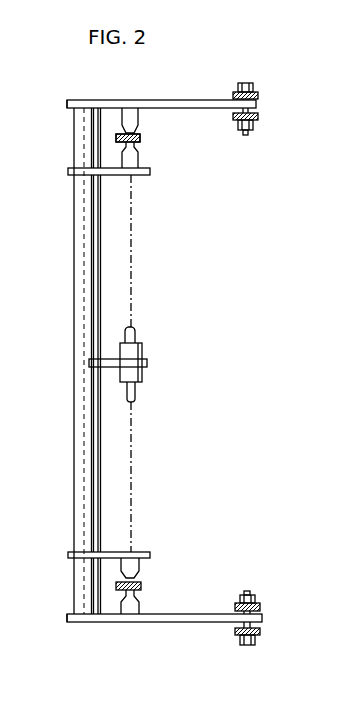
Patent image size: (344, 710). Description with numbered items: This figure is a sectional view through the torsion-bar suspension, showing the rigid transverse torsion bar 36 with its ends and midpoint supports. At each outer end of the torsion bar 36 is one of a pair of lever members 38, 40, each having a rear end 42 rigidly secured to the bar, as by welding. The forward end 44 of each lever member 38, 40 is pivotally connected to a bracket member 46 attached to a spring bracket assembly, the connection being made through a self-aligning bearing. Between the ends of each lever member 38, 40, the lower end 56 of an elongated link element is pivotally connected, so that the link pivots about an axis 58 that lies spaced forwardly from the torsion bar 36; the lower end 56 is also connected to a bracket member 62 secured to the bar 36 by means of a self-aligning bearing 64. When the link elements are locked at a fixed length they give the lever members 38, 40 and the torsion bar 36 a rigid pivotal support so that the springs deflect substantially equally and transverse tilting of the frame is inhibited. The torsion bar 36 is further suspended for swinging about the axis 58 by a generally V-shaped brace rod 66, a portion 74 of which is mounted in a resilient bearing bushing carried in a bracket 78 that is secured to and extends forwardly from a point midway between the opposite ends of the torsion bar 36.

The torsion bar 36 is at (74, 330).
The lever member 38 is at (189, 623).
The lever member 40 is at (163, 100).
The rear ends of lever members 42 is at (73, 100).
The forward ends of lever members 44 is at (258, 105).
The bracket member 46 is at (249, 92).
The lower ends of link elements 56 is at (141, 138).
The axis 58 is at (133, 252).
The bracket member 62 is at (166, 164).
The self-aligning bearing 64 is at (138, 146).
The brace rod 66 is at (134, 335).
The portion of brace rod 74 is at (143, 375).
The bracket 78 is at (112, 368).